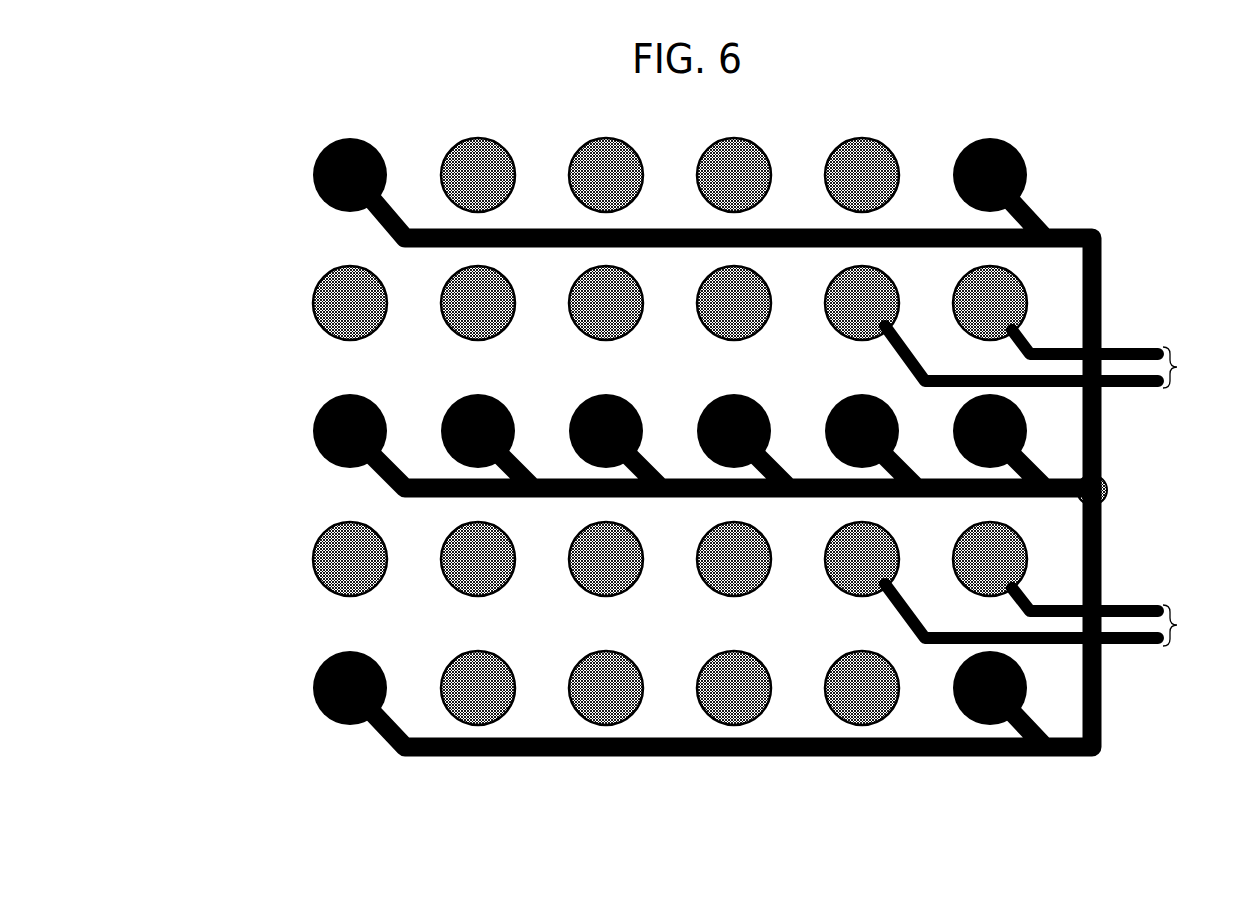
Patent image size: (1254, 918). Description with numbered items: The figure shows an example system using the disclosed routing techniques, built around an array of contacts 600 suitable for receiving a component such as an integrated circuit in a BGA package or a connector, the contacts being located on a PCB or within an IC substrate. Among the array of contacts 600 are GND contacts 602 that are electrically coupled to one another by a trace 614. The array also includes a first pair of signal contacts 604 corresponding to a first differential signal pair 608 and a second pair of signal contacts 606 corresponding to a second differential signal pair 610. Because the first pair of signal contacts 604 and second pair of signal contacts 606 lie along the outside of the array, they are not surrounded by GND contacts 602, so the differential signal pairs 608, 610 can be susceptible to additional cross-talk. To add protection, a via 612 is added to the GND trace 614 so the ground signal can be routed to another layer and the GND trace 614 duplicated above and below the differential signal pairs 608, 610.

The array of contacts 600 is at (293, 109).
The GND contacts 602 is at (321, 662).
The first pair of signal contacts 604 is at (950, 303).
The second pair of signal contacts 606 is at (950, 561).
The first differential signal pair 608 is at (1189, 366).
The second differential signal pair 610 is at (1189, 624).
The via 612 is at (1115, 490).
The trace 614 is at (1109, 232).